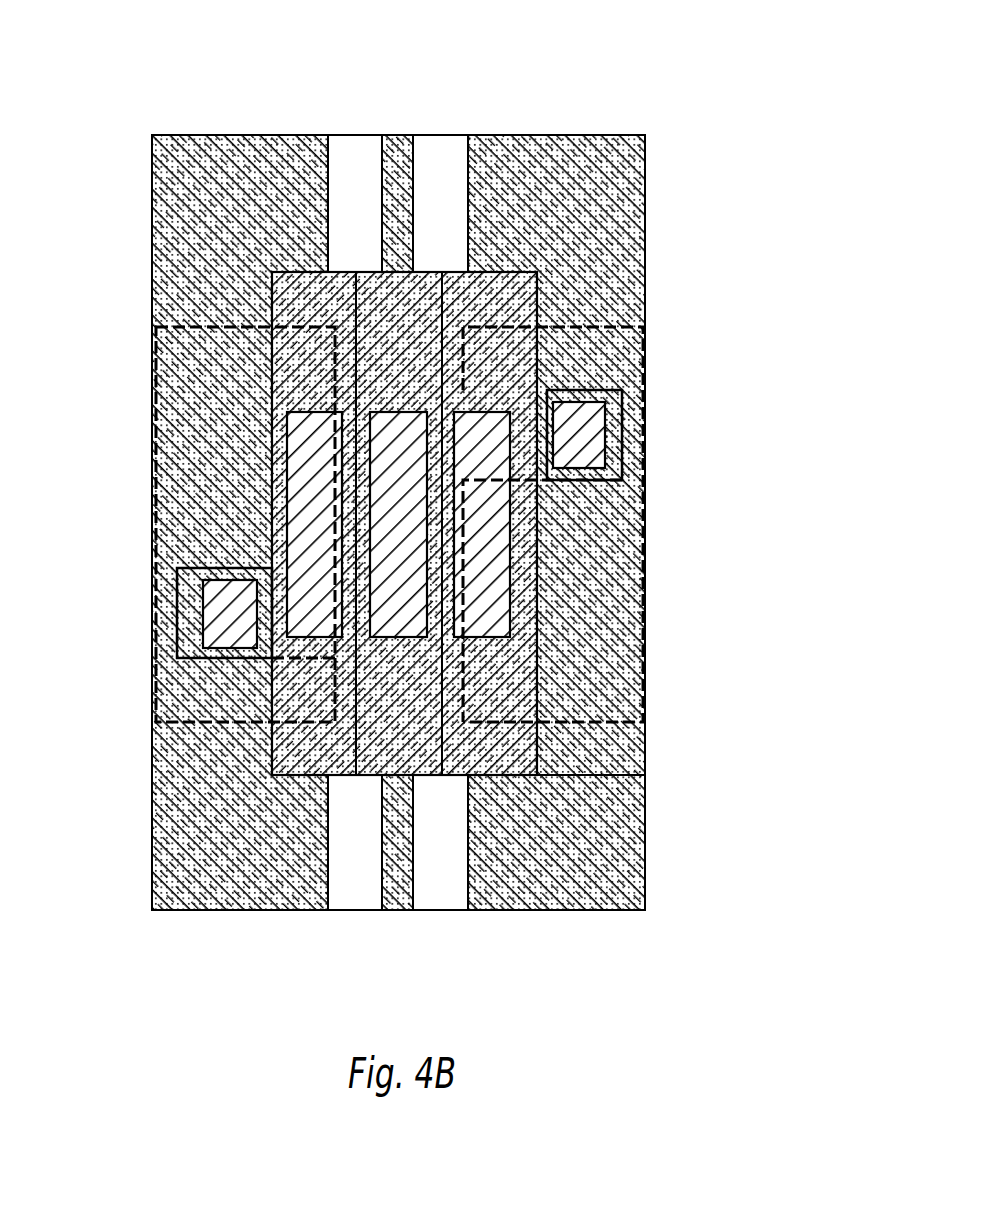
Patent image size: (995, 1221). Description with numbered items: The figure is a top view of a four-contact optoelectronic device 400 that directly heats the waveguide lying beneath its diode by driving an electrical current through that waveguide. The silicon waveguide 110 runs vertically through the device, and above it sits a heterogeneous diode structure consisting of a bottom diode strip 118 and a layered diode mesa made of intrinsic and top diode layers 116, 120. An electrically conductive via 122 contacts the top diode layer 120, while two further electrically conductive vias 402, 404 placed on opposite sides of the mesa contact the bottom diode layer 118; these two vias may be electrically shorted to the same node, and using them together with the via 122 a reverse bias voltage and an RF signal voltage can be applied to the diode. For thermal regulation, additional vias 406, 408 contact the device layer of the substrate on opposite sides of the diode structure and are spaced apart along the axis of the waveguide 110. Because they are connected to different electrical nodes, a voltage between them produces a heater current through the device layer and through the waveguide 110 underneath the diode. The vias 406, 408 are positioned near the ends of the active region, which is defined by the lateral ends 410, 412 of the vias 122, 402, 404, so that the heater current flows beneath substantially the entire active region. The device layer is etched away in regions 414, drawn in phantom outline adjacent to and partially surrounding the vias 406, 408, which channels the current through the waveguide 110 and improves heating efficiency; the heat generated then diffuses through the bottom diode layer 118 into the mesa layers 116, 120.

The four-contact optoelectronic device 400 is at (658, 38).
The waveguide 110 is at (396, 135).
The intrinsic diode layer 116 is at (398, 775).
The top diode layer 120 is at (397, 842).
The bottom diode strip 118 is at (497, 775).
The electrically conductive via 122 is at (402, 587).
The electrically conductive via 402 is at (312, 484).
The electrically conductive via 404 is at (488, 523).
The additional via 406 is at (205, 600).
The additional via 408 is at (575, 440).
The lateral end 410 is at (585, 750).
The lateral end 412 is at (325, 320).
The etched-away region 414 is at (620, 327).